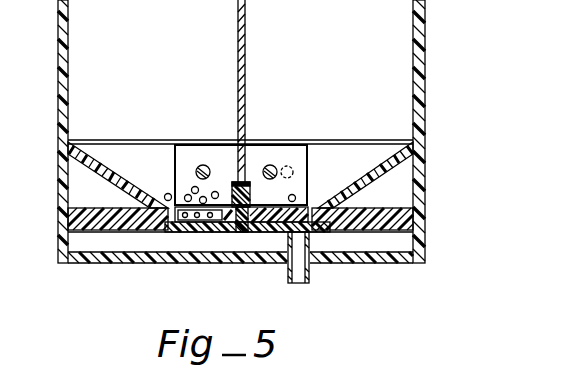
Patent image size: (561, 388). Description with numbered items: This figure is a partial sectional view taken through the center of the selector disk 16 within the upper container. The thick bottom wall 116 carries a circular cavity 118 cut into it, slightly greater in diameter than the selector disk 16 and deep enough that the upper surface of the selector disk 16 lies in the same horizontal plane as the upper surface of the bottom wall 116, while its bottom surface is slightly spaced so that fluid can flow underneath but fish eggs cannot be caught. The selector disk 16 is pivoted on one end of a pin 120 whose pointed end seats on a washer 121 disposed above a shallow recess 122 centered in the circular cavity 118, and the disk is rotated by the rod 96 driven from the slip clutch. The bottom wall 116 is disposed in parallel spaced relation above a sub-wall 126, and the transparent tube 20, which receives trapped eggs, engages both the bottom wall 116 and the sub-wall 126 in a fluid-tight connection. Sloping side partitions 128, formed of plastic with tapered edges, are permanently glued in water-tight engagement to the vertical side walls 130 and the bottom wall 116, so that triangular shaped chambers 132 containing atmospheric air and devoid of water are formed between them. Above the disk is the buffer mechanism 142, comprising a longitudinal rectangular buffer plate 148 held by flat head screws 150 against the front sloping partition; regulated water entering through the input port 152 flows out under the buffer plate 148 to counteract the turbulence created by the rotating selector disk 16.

The selector disk 16 is at (257, 212).
The transparent tube 20 is at (309, 247).
The rod 96 is at (246, 43).
The bottom wall 116 is at (403, 219).
The circular cavity 118 is at (165, 217).
The pin 120 is at (222, 222).
The washer 121 is at (250, 212).
The shallow recess 122 is at (235, 210).
The sub-wall 126 is at (392, 258).
The sloping side partitions 128 is at (95, 160).
The vertical side walls 130 is at (68, 39).
The triangular shaped chambers 132 is at (97, 187).
The buffer mechanism 142 is at (293, 143).
The buffer plate 148 is at (256, 150).
The flat head screws 150 is at (265, 168).
The input port 152 is at (305, 170).